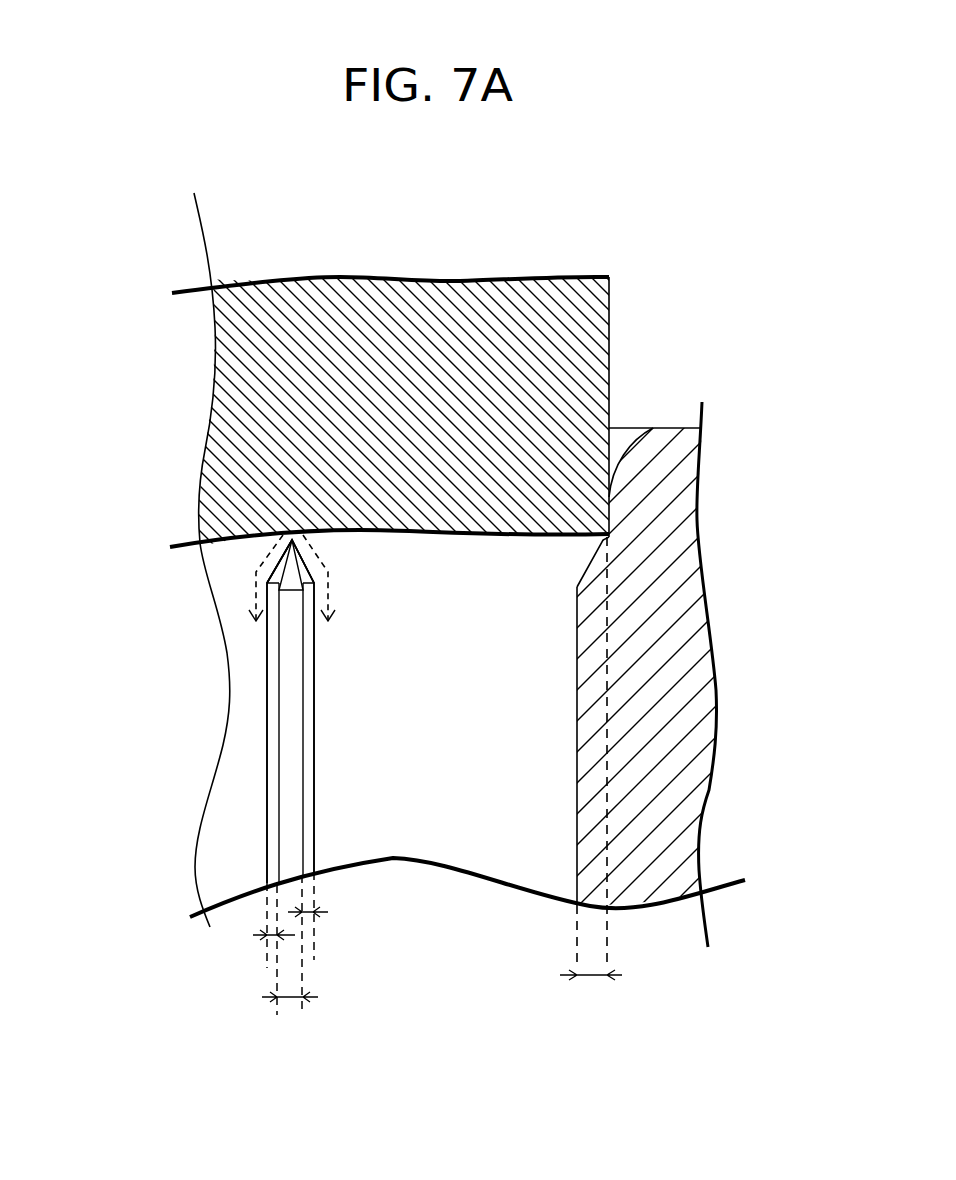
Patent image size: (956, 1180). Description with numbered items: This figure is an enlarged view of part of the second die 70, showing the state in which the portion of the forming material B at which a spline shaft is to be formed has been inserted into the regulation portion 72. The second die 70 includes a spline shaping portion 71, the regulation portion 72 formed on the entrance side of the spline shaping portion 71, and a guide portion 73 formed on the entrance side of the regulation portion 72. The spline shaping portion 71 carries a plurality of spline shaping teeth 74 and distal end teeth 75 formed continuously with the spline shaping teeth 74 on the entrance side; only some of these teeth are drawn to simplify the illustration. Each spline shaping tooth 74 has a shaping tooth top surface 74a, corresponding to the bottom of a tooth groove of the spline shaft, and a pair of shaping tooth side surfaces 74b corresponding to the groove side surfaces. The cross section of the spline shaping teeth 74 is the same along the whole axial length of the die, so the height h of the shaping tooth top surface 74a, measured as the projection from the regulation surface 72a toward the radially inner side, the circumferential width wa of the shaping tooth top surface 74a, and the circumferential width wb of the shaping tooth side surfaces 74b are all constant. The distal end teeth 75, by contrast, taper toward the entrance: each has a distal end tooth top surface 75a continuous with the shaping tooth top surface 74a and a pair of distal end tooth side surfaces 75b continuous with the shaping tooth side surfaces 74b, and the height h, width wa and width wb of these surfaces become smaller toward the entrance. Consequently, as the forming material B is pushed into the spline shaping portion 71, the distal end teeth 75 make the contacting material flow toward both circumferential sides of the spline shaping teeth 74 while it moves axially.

The second die 70 is at (496, 636).
The spline shaping portion 71 is at (557, 853).
The regulation portion 72 is at (389, 381).
The regulation surface 72a is at (607, 494).
The guide portion 73 is at (650, 435).
The spline shaping teeth 74 is at (258, 707).
The shaping tooth top surface 74a is at (577, 702).
The shaping tooth side surfaces 74b is at (587, 748).
The distal end teeth 75 is at (248, 580).
The distal end tooth top surface 75a is at (578, 587).
The distal end tooth side surfaces 75b is at (592, 562).
The forming material B is at (440, 383).
The width of the tooth top surface wa is at (287, 1000).
The width of the tooth side surfaces wb is at (263, 937).
The height h is at (588, 978).